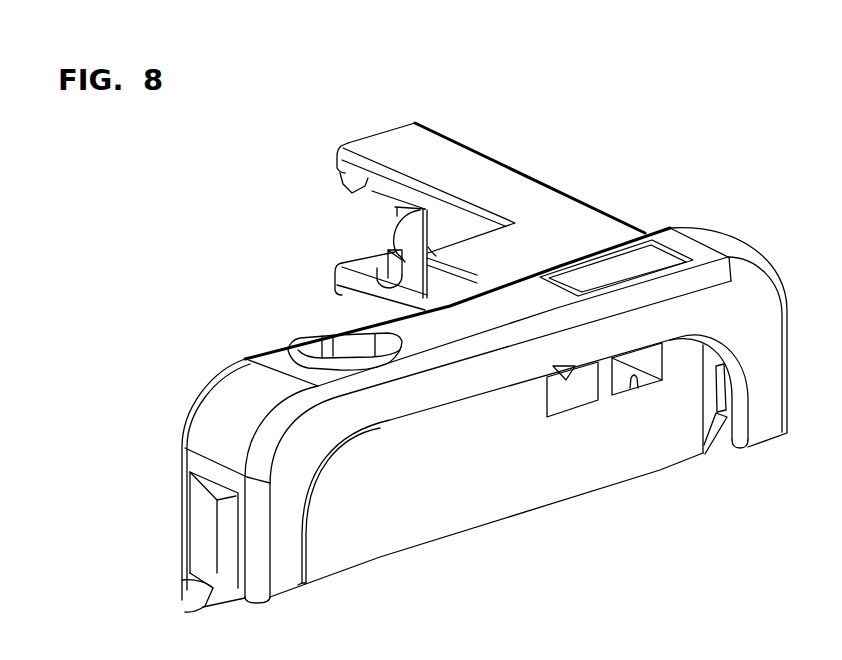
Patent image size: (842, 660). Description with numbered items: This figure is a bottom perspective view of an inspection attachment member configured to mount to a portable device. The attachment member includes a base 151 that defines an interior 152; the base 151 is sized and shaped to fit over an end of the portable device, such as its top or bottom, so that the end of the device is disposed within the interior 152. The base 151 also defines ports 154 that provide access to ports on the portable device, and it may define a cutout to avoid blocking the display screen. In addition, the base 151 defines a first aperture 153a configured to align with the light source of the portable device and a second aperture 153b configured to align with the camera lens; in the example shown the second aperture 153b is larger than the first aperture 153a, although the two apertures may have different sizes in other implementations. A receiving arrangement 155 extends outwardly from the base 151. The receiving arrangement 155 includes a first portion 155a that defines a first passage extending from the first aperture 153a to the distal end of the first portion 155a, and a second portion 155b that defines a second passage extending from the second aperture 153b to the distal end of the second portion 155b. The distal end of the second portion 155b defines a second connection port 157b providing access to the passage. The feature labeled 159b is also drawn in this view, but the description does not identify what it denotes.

The base 151 is at (615, 483).
The interior 152 is at (408, 488).
The first aperture 153a is at (565, 372).
The second aperture 153b is at (637, 388).
The ports 154 is at (322, 363).
The receiving arrangement 155 is at (447, 171).
The first portion 155a is at (530, 263).
The second portion 155b is at (450, 138).
The second connection port 157b is at (355, 182).
The protrusion 159b is at (405, 242).